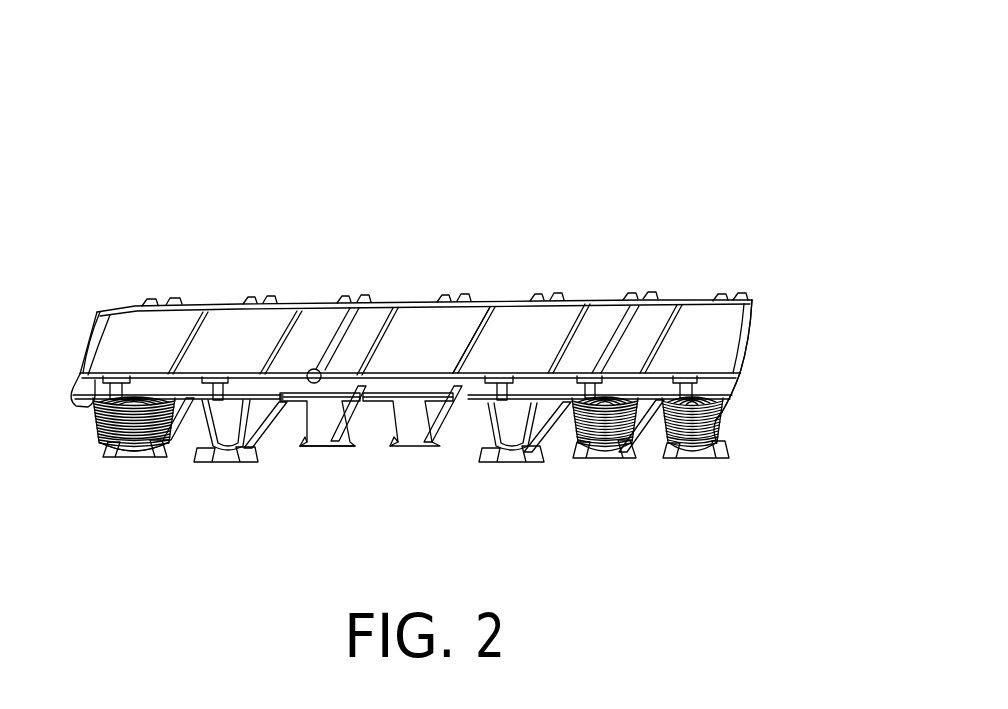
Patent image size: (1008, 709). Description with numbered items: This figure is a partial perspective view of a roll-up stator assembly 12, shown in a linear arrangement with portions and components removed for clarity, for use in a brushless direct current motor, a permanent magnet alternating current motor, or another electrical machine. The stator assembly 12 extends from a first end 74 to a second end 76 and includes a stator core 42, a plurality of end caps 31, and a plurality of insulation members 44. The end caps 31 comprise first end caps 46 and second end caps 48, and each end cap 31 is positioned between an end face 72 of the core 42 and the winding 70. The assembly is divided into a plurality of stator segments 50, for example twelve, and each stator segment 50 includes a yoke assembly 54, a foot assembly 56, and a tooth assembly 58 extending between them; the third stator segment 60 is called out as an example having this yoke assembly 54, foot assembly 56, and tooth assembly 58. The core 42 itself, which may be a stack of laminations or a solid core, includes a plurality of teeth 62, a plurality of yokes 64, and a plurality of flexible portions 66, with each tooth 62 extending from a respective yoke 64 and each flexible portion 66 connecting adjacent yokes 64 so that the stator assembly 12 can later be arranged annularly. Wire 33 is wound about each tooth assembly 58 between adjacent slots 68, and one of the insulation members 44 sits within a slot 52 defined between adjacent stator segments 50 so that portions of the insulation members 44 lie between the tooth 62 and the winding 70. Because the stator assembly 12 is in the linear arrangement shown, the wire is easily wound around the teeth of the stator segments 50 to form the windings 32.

The stator assembly 12 is at (703, 99).
The stator core 42 is at (759, 192).
The first end 74 is at (57, 292).
The second end cap 48 is at (143, 306).
The tooth assembly 58 is at (172, 284).
The stator segment 50 is at (375, 287).
The third stator segment 60 is at (731, 282).
The yoke assembly 54 is at (757, 334).
The second end 76 is at (784, 363).
The yoke 64 is at (540, 330).
The flexible portion 66 is at (583, 315).
The end cap 31 is at (89, 374).
The first end cap 46 is at (100, 402).
The wire 33 is at (107, 426).
The winding 32 is at (75, 441).
The winding 70 is at (97, 438).
The slot 68 is at (167, 477).
The insulation member 44 is at (300, 413).
The slot 52 is at (294, 450).
The end face 72 is at (453, 427).
The tooth 62 is at (533, 413).
The foot assembly 56 is at (728, 470).